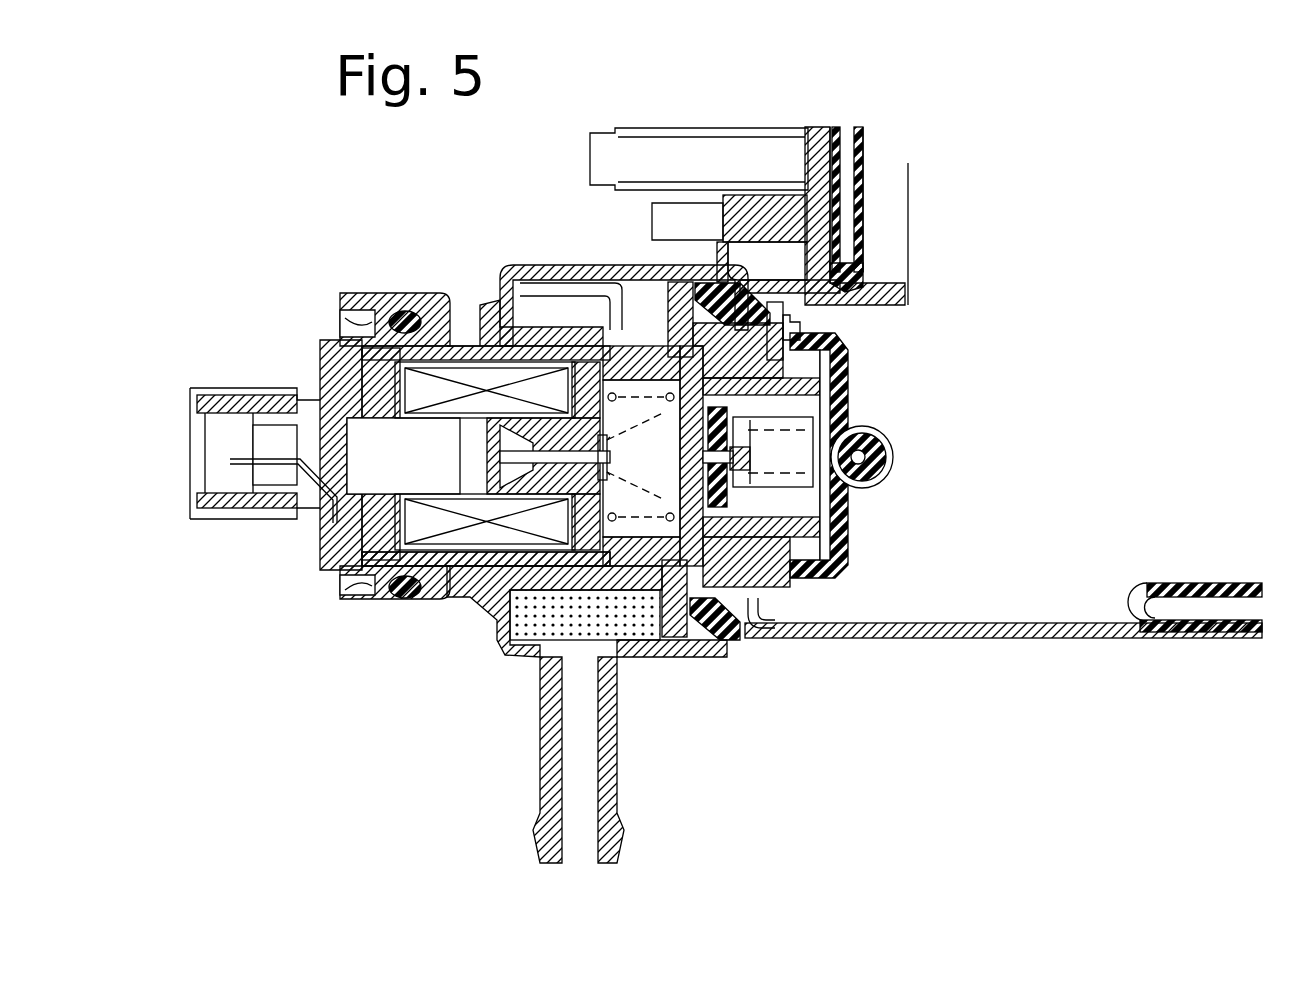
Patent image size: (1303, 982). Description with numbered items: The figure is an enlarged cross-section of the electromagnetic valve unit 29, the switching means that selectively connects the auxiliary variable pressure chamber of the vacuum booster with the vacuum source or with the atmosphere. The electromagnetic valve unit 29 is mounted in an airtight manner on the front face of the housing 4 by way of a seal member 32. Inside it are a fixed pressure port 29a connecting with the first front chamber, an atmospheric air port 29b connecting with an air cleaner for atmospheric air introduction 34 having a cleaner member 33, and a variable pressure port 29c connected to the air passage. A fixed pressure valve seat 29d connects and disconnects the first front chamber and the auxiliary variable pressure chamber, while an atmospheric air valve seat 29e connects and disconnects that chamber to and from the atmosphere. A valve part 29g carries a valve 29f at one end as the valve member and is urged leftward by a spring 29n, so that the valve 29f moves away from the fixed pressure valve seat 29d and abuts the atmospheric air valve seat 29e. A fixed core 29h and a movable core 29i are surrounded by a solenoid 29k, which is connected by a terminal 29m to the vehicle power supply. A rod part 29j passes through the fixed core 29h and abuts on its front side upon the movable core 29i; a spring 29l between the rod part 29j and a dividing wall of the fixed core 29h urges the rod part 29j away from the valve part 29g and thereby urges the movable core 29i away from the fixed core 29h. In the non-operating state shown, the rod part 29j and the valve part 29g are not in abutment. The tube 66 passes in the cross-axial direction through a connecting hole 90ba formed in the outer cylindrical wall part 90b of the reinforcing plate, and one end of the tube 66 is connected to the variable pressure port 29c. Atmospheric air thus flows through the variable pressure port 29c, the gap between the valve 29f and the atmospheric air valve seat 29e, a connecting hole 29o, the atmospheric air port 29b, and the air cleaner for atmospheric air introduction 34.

The housing 4 is at (998, 638).
The electromagnetic valve unit 29 is at (478, 630).
The fixed pressure port 29a is at (845, 540).
The atmospheric air port 29b is at (652, 420).
The variable pressure port 29c is at (787, 407).
The fixed pressure valve seat 29d is at (748, 457).
The atmospheric air valve seat 29e is at (725, 650).
The valve 29f is at (760, 622).
The valve part 29g is at (857, 437).
The fixed core 29h is at (545, 560).
The movable core 29i is at (375, 472).
The rod part 29j is at (478, 577).
The solenoid 29k is at (455, 388).
The spring 29l is at (600, 345).
The terminal 29m is at (238, 465).
The spring 29n is at (843, 507).
The connecting hole 29o is at (570, 700).
The seal member 32 is at (714, 297).
The cleaner member 33 is at (632, 607).
The air cleaner for atmospheric air introduction 34 is at (675, 650).
The tube 66 is at (858, 183).
The outer cylindrical wall part 90b is at (905, 300).
The connecting hole 90ba is at (862, 300).